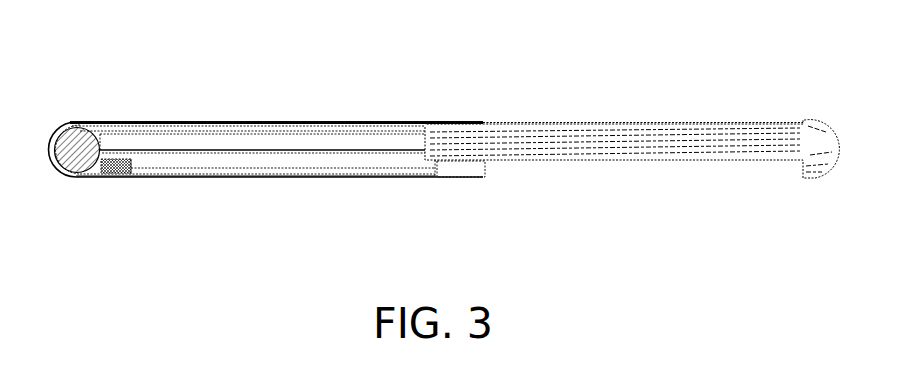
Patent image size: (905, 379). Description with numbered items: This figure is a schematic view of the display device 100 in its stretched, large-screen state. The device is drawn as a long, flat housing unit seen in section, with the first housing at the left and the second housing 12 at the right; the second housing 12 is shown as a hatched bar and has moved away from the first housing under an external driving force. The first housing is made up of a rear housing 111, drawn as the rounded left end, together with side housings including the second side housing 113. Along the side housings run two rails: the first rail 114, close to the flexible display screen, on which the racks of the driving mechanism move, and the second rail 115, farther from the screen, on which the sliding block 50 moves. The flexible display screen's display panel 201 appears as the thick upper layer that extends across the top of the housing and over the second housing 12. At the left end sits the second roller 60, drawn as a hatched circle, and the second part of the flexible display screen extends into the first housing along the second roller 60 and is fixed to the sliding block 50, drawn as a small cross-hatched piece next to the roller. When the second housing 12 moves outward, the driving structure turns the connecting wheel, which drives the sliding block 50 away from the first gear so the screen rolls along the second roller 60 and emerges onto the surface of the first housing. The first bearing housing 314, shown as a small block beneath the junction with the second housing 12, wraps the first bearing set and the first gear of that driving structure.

The display device 100 is at (118, 50).
The second roller 60 is at (87, 145).
The sliding block 50 is at (119, 170).
The rear housing 111 is at (52, 165).
The display panel 201 is at (243, 121).
The first rail 114 is at (345, 138).
The second side housing 113 is at (269, 161).
The second rail 115 is at (348, 163).
The first bearing housing 314 is at (461, 170).
The second housing 12 is at (648, 147).